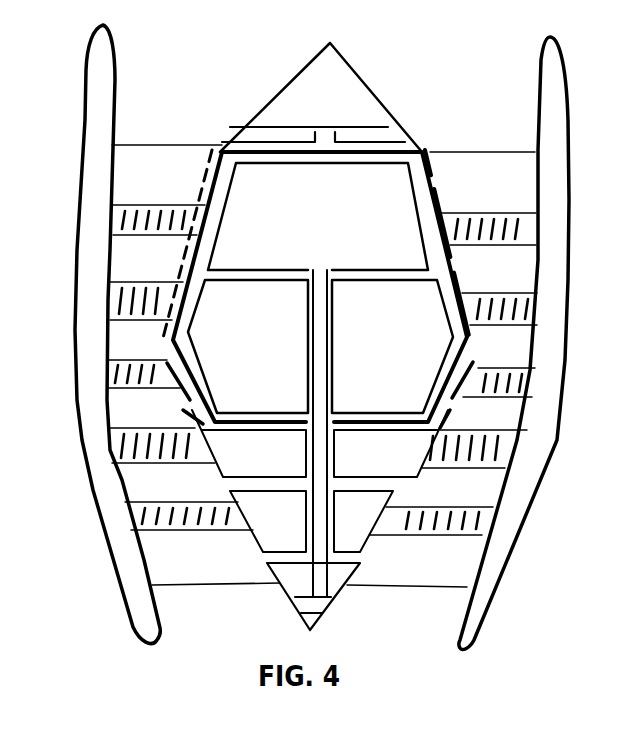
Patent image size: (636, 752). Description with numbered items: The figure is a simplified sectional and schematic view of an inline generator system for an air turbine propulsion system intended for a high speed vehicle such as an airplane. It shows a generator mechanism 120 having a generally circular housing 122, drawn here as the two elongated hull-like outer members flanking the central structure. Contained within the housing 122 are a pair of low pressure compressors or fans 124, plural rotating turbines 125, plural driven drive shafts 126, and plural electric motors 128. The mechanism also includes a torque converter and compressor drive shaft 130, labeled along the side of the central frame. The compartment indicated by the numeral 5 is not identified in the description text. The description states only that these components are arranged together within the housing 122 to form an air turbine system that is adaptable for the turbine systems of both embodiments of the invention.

The frame 5 is at (419, 147).
The generator mechanism 120 is at (453, 92).
The generally circular housing 122 is at (573, 155).
The low pressure compressors or fans 124 is at (170, 247).
The rotating turbines 125 is at (517, 407).
The driven drive shafts 126 is at (315, 537).
The electric motors 128 is at (348, 187).
The torque converter and compressor drive shaft 130 is at (478, 290).